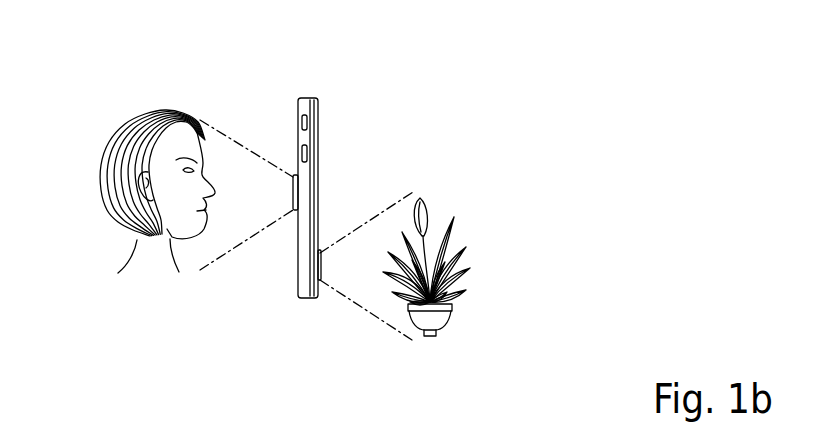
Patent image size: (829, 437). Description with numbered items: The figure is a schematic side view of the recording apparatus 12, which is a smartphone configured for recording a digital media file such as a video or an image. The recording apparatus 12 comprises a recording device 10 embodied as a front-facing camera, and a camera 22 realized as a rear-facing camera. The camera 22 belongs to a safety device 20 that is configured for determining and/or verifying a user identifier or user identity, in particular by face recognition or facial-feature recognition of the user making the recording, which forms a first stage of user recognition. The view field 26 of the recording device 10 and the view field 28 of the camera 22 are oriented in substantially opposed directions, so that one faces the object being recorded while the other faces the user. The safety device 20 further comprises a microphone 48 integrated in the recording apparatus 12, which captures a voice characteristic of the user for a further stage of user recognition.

The recording device 10 is at (295, 205).
The recording apparatus 12 is at (395, 168).
The safety device 20 is at (280, 143).
The camera 22 is at (282, 168).
The view field 26 is at (375, 322).
The view field 28 is at (240, 247).
The microphone 48 is at (320, 124).